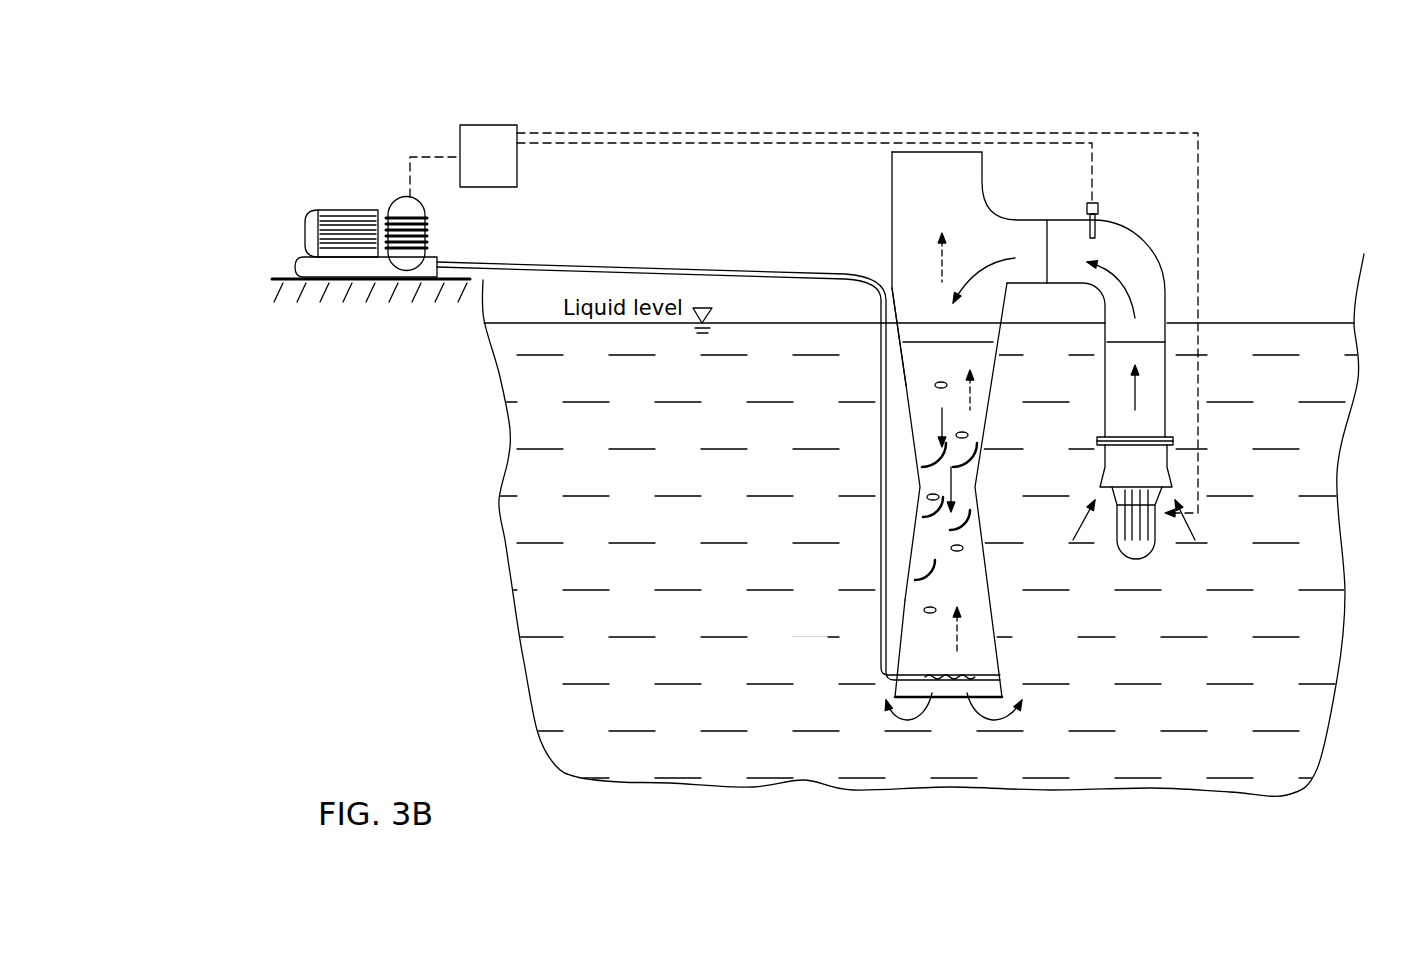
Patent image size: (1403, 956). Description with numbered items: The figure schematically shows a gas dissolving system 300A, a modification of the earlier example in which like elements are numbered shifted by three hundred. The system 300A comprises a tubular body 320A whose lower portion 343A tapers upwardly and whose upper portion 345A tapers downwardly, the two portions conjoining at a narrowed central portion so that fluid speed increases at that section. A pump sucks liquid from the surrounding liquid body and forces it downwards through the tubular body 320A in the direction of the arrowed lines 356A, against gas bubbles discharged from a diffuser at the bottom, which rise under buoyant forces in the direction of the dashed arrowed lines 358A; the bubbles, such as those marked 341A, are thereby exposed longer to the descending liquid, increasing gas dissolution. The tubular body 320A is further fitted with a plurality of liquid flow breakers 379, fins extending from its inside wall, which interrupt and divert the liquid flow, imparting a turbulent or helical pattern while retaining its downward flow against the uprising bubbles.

The system 300A is at (303, 113).
The tubular body 320A is at (913, 537).
The air bubbles in throat 341A is at (933, 489).
The upper portion 345A is at (905, 397).
The lower portion 343A is at (900, 643).
The arrowed lines 356A is at (945, 423).
The dashed arrowed lines 358A is at (960, 643).
The liquid flow breakers 379 is at (935, 563).